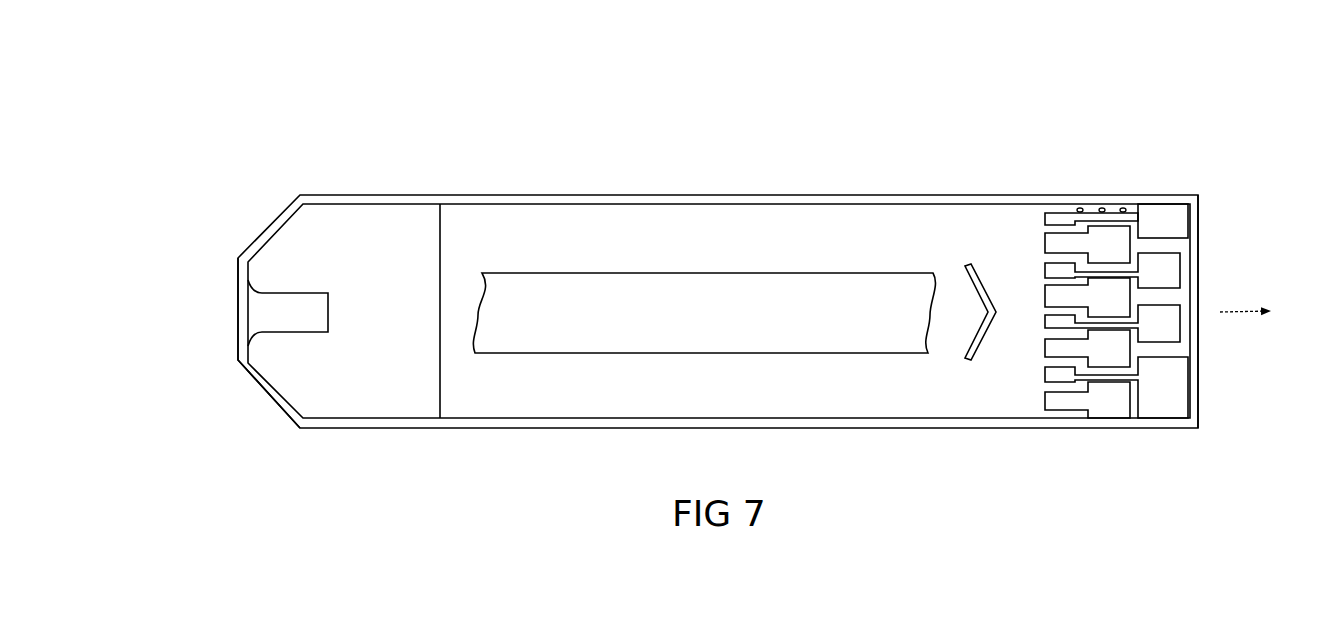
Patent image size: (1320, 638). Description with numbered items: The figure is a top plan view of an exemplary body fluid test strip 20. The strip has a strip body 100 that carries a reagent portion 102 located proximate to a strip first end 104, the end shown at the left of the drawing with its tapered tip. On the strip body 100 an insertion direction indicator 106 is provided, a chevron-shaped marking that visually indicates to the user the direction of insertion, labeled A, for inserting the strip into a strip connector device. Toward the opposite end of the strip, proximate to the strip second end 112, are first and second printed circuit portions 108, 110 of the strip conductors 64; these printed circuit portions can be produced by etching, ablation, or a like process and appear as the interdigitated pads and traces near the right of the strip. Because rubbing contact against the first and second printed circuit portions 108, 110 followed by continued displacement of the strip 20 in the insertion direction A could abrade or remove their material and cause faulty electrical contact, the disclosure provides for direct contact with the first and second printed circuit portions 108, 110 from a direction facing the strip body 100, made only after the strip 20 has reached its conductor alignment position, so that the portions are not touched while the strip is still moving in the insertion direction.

The body fluid test strip 20 is at (816, 118).
The strip conductors 64 is at (1210, 291).
The strip body 100 is at (489, 408).
The reagent portion 102 is at (263, 307).
The strip first end 104 is at (245, 352).
The insertion direction indicator 106 is at (987, 290).
The first printed circuit portion 108 is at (1160, 213).
The second printed circuit portion 110 is at (1173, 387).
The strip second end 112 is at (1196, 344).